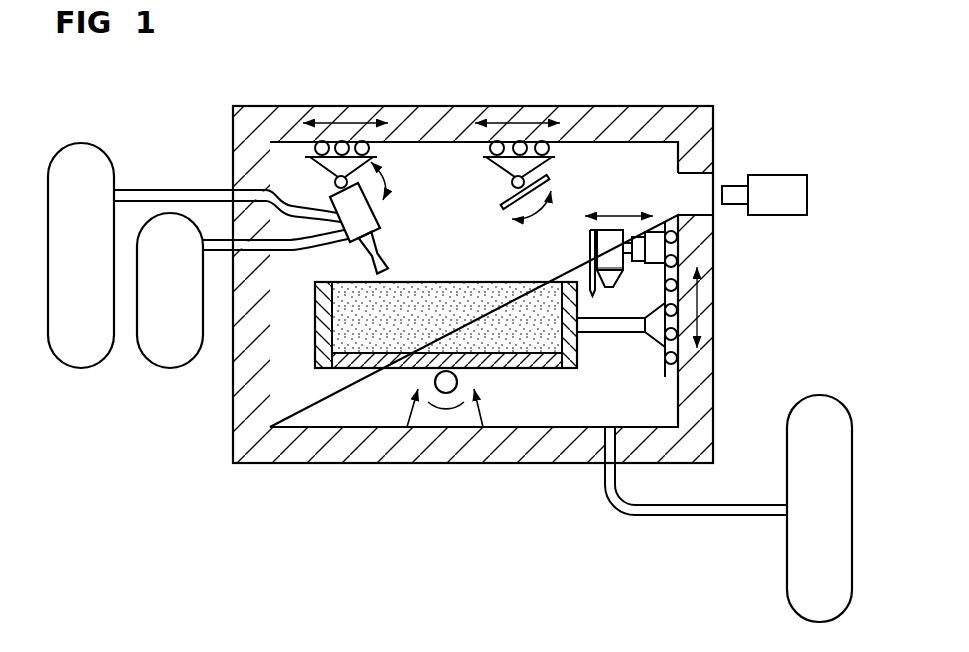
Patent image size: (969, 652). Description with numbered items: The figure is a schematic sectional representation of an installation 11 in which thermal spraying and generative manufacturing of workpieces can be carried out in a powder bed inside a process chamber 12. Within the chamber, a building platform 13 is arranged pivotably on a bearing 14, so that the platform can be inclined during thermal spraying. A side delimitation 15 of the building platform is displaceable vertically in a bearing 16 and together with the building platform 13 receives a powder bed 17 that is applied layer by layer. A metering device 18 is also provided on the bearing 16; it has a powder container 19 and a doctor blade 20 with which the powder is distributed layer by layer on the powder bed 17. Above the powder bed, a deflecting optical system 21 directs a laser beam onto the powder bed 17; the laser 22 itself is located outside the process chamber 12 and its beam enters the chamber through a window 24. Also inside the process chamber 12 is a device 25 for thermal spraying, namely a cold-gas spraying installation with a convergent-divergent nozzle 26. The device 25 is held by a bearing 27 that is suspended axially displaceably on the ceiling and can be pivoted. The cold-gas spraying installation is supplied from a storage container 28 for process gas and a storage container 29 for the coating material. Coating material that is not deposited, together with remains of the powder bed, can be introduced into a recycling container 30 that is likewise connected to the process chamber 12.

The installation 11 is at (449, 100).
The process chamber 12 is at (630, 118).
The building platform 13 is at (512, 360).
The bearing 14 is at (455, 420).
The side delimitation 15 is at (322, 362).
The bearing 16 is at (657, 332).
The powder bed 17 is at (370, 345).
The metering device 18 is at (619, 211).
The powder container 19 is at (608, 251).
The doctor blade 20 is at (590, 262).
The deflecting optical system 21 is at (549, 176).
The laser 22 is at (792, 188).
The window 24 is at (705, 180).
The device for thermal spraying 25 is at (392, 228).
The convergent-divergent nozzle 26 is at (386, 265).
The bearing 27 is at (330, 162).
The storage container for process gas 28 is at (77, 355).
The storage container for coating material 29 is at (167, 355).
The recycling container 30 is at (797, 576).